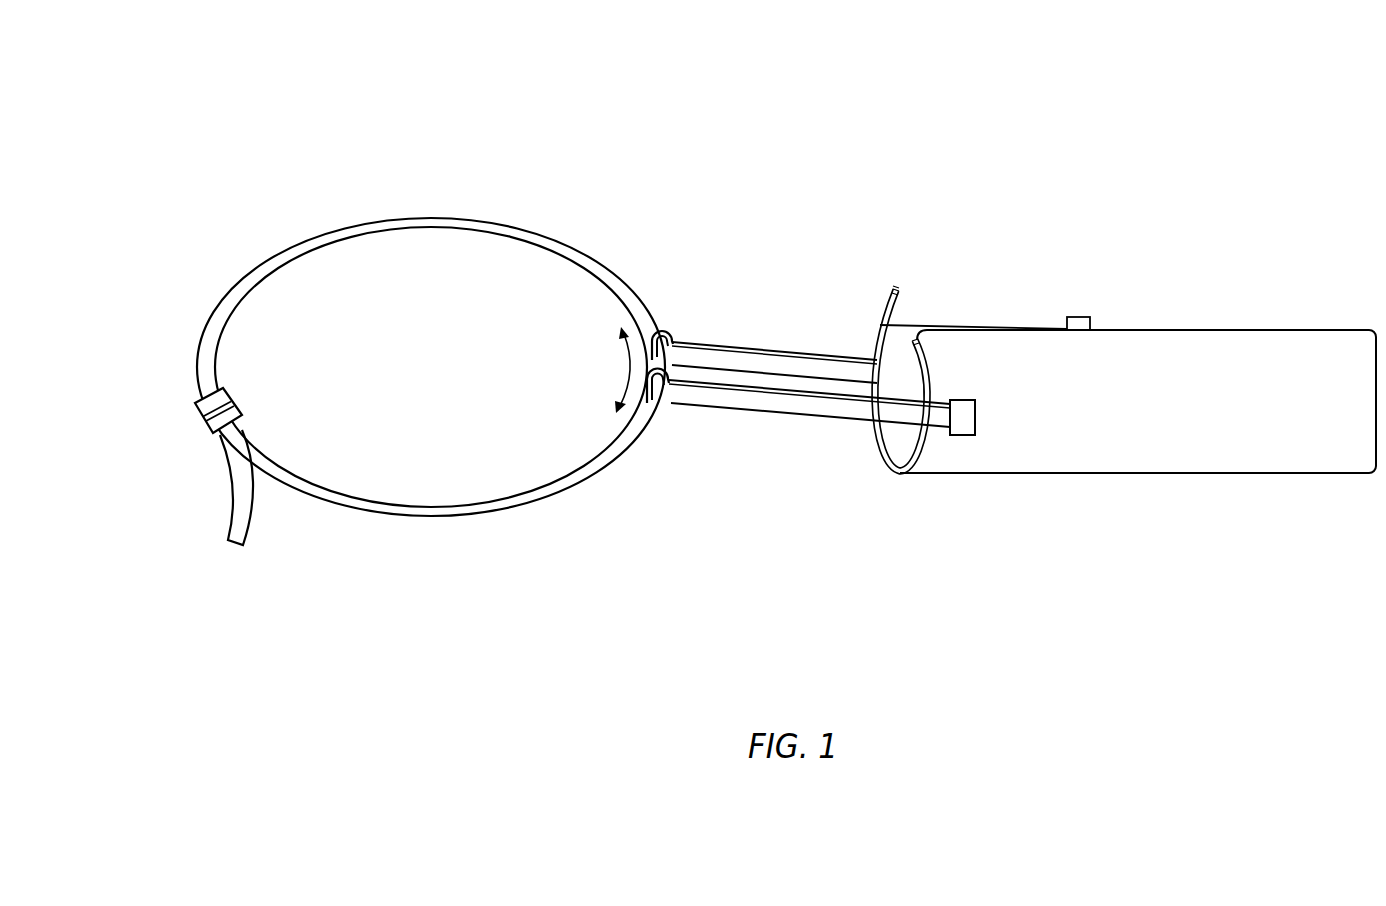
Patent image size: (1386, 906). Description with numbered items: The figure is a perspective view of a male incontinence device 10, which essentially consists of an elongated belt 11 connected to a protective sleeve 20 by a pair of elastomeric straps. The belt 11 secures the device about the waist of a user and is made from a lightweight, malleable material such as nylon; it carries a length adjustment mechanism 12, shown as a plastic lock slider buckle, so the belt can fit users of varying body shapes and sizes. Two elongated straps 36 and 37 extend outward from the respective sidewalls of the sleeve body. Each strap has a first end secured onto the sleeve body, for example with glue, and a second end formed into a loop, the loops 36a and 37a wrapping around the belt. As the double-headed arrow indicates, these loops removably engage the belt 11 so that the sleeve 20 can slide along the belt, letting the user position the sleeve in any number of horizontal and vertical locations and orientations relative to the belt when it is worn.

The male incontinence device 10 is at (747, 303).
The elongated belt 11 is at (441, 195).
The length adjustment mechanism 12 is at (196, 409).
The protective sleeve 20 is at (1150, 318).
The elongated strap 36 is at (777, 406).
The loop 36a is at (663, 407).
The elongated strap 37 is at (775, 358).
The loop 37a is at (670, 334).